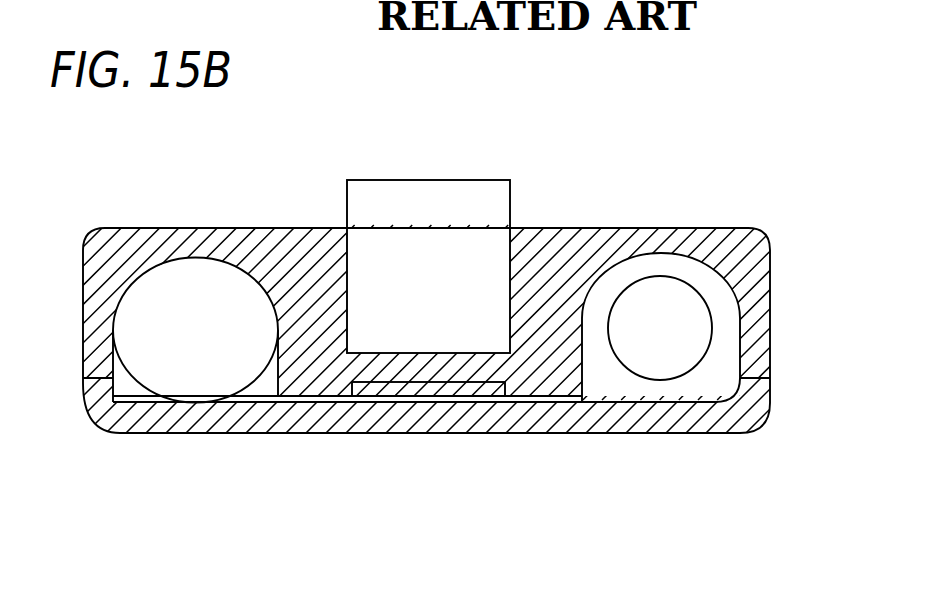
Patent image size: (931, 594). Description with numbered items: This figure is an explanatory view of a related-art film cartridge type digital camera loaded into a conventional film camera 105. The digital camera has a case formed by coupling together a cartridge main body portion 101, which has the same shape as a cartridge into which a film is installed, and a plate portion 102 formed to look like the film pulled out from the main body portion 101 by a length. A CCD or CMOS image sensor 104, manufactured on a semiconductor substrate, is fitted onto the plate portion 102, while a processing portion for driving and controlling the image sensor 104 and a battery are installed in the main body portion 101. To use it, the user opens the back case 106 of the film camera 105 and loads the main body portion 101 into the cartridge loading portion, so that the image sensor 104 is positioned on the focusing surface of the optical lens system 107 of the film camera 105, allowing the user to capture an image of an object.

The cartridge main body portion 101 is at (158, 364).
The plate portion 102 is at (551, 400).
The image sensor 104 is at (421, 392).
The film camera 105 is at (284, 248).
The back case 106 is at (292, 420).
The optical lens system 107 is at (465, 197).